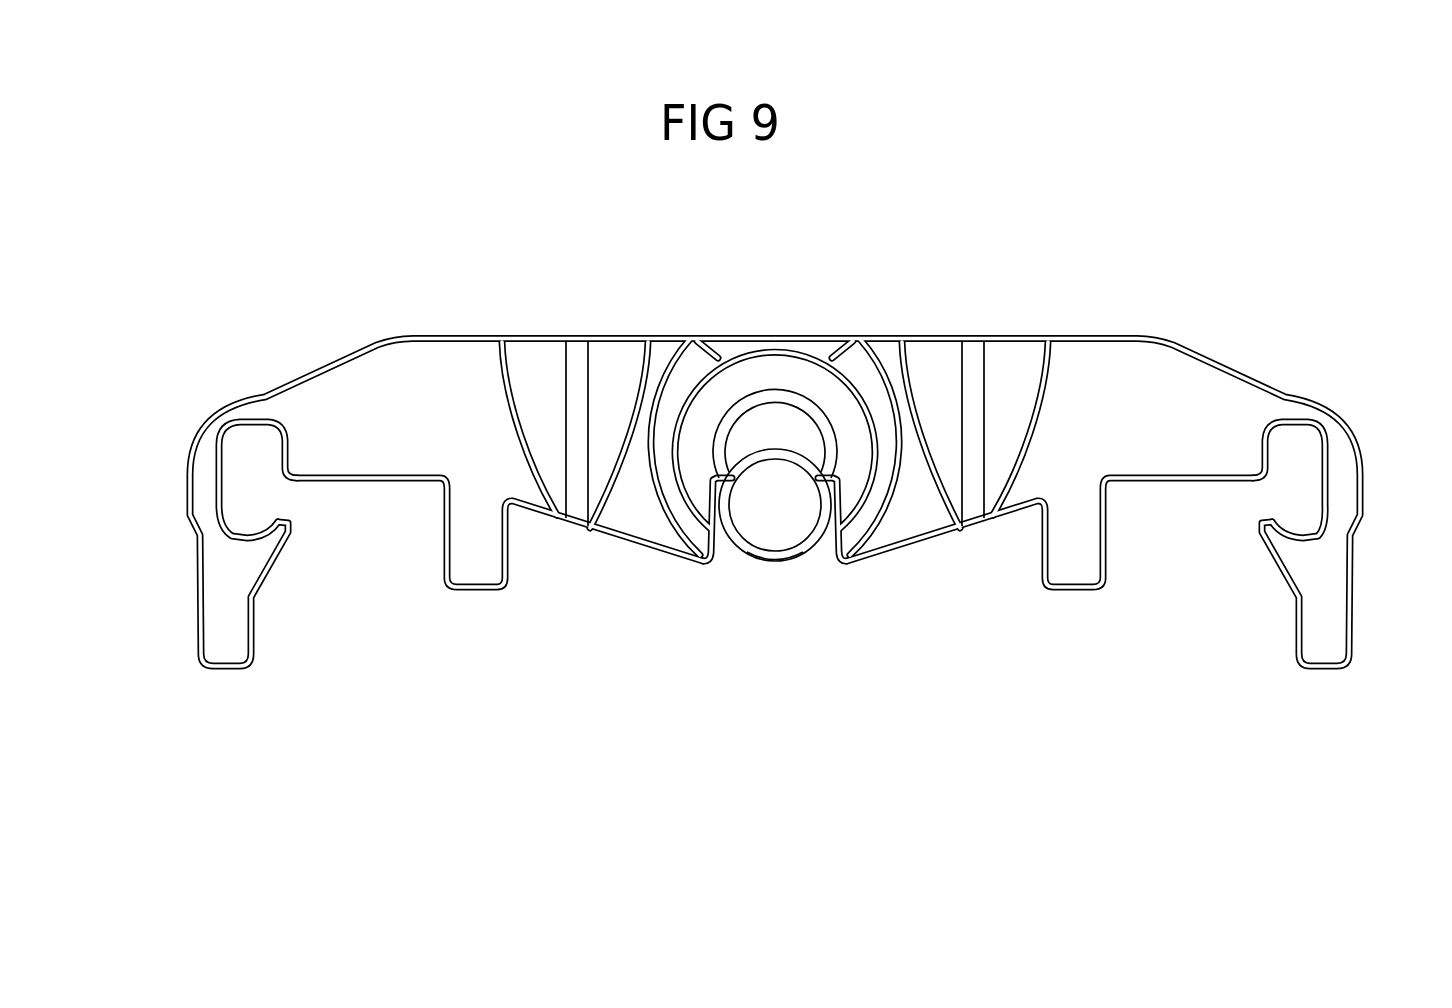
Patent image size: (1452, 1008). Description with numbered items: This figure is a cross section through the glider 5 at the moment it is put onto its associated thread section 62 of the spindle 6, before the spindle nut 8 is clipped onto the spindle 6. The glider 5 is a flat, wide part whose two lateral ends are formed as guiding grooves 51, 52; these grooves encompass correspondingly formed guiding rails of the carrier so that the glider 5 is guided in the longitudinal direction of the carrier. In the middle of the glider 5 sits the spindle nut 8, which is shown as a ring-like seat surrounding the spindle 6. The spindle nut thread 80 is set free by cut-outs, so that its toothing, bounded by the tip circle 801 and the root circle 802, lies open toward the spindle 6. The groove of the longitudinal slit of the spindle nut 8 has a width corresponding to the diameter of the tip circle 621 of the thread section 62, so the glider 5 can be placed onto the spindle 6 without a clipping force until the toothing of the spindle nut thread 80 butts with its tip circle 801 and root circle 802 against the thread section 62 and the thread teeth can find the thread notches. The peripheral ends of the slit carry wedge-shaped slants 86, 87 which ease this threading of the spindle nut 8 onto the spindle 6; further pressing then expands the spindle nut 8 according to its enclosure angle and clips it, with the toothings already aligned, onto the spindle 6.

The glider 5 is at (762, 463).
The guiding groove 51 is at (245, 488).
The guiding groove 52 is at (1310, 488).
The spindle 6 is at (773, 525).
The thread section 62 is at (805, 550).
The tip circle 621 is at (792, 562).
The spindle nut 8 is at (720, 355).
The spindle nut thread 80 is at (811, 349).
The tip circle 801 is at (787, 397).
The root circle 802 is at (758, 390).
The wedge-shaped slant 86 is at (722, 562).
The wedge-shaped slant 87 is at (827, 562).